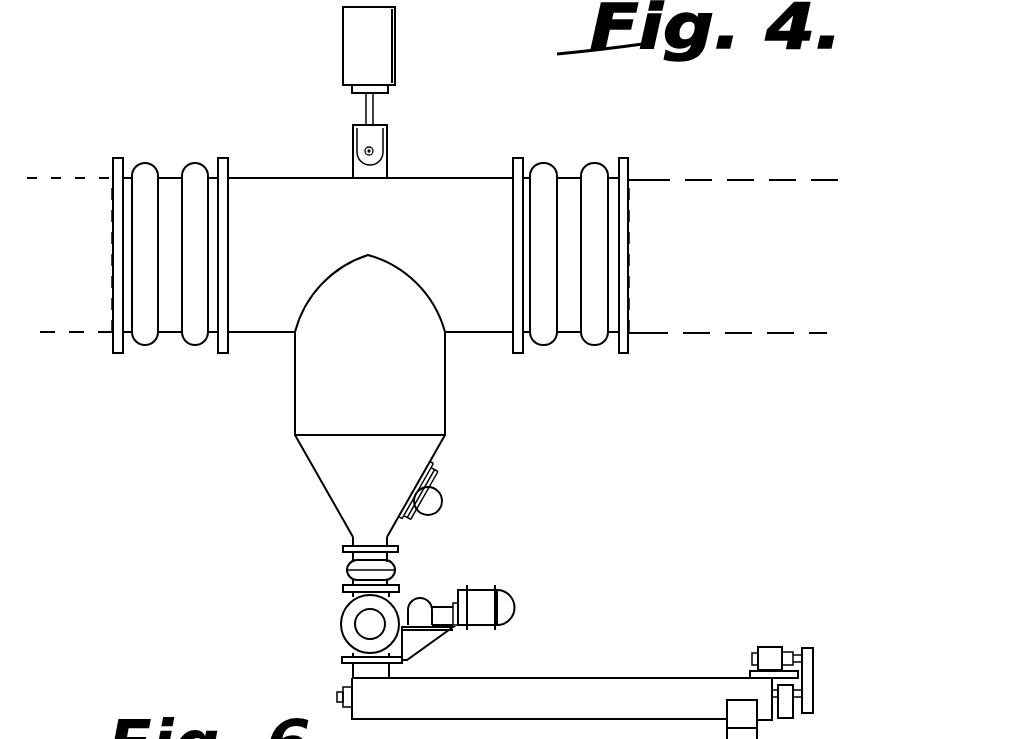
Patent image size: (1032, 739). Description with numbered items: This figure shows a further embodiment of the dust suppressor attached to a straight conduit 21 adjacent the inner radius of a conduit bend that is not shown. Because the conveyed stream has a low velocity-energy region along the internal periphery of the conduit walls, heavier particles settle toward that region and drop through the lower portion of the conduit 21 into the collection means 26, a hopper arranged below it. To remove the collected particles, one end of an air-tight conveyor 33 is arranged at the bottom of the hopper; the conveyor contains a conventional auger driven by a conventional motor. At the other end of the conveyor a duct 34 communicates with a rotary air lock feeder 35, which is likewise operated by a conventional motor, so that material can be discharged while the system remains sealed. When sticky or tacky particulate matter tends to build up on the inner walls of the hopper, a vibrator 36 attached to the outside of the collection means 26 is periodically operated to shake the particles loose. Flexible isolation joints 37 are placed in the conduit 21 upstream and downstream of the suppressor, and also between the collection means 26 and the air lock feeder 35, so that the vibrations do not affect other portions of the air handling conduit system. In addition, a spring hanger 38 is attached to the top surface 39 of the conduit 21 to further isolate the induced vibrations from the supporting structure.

The straight conduit 21 is at (465, 178).
The collection means 26 is at (306, 468).
The air-tight conveyor 33 is at (575, 678).
The duct 34 is at (345, 590).
The rotary air lock feeder 35 is at (347, 623).
The vibrator 36 is at (436, 498).
The flexible isolation joints 37 is at (197, 345).
The spring hanger 38 is at (388, 63).
The top surface 39 is at (320, 178).